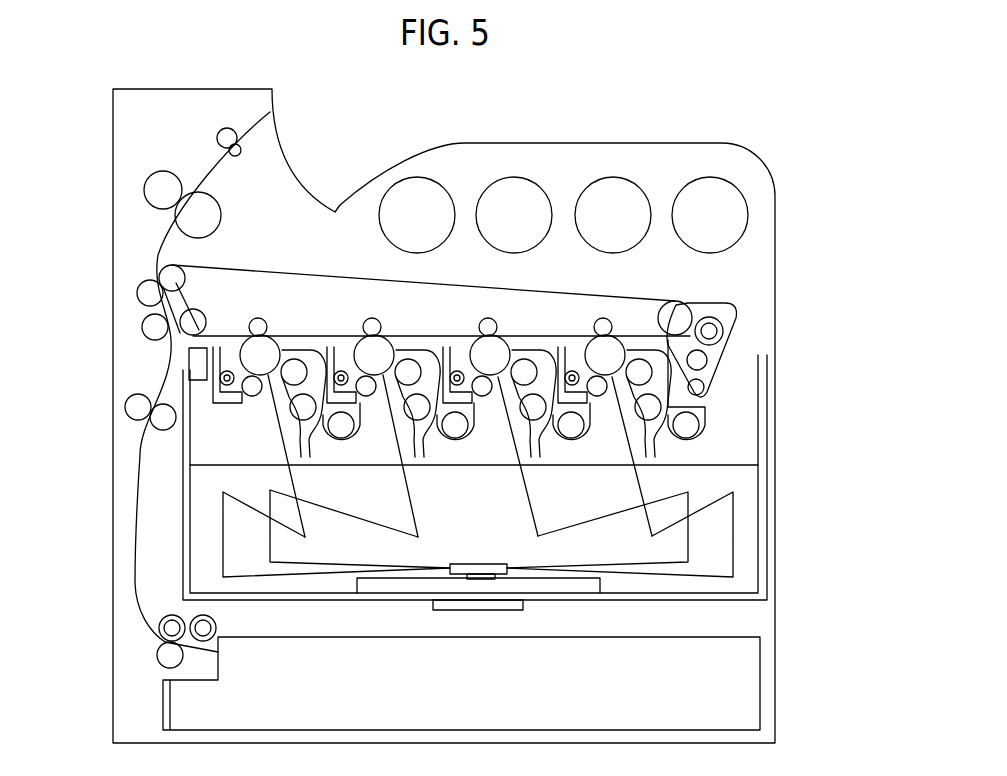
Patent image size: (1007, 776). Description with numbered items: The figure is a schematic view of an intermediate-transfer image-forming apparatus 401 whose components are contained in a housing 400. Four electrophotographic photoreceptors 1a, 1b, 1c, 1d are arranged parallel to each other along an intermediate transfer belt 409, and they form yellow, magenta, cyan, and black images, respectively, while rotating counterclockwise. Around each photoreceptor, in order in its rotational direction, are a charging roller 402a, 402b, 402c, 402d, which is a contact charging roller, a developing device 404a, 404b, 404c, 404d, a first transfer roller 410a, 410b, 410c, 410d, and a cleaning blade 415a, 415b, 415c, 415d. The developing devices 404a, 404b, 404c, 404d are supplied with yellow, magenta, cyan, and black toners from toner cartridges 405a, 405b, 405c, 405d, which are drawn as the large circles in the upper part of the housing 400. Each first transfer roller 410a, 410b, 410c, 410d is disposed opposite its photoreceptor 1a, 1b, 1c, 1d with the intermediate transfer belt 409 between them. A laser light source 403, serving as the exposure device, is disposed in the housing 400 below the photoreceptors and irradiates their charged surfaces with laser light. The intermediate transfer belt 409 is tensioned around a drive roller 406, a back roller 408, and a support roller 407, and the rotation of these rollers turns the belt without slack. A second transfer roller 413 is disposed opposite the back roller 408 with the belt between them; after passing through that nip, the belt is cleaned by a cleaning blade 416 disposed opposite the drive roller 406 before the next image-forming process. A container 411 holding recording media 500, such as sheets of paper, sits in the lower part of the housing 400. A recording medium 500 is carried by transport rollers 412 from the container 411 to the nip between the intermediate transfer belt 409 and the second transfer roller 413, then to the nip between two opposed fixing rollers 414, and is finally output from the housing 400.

The image-forming apparatus 401 is at (727, 95).
The housing 400 is at (760, 161).
The recording medium 500 is at (140, 506).
The container 411 is at (740, 640).
The laser light source (exposure device) 403 is at (505, 570).
The intermediate transfer belt 409 is at (441, 283).
The back roller 408 is at (160, 272).
The second transfer roller 413 is at (137, 293).
The support roller 407 is at (180, 322).
The fixing rollers 414 is at (192, 216).
The transport rollers 412 is at (230, 150).
The toner cartridge 405a is at (710, 190).
The toner cartridge 405b is at (613, 190).
The toner cartridge 405c is at (514, 190).
The toner cartridge 405d is at (417, 190).
The electrophotographic photoreceptor 1a is at (620, 337).
The electrophotographic photoreceptor 1b is at (498, 350).
The electrophotographic photoreceptor 1c is at (382, 350).
The electrophotographic photoreceptor 1d is at (268, 350).
The first transfer roller 410a is at (604, 318).
The first transfer roller 410b is at (488, 318).
The first transfer roller 410c is at (372, 318).
The first transfer roller 410d is at (257, 318).
The charging roller 402a is at (598, 396).
The charging roller 402b is at (482, 396).
The charging roller 402c is at (367, 396).
The charging roller 402d is at (252, 396).
The cleaning blade 415a is at (572, 371).
The cleaning blade 415b is at (457, 371).
The cleaning blade 415c is at (341, 371).
The cleaning blade 415d is at (227, 371).
The developing device 404a is at (650, 430).
The developing device 404b is at (533, 420).
The developing device 404c is at (416, 420).
The developing device 404d is at (301, 420).
The drive roller 406 is at (700, 302).
The cleaning blade 416 is at (708, 357).